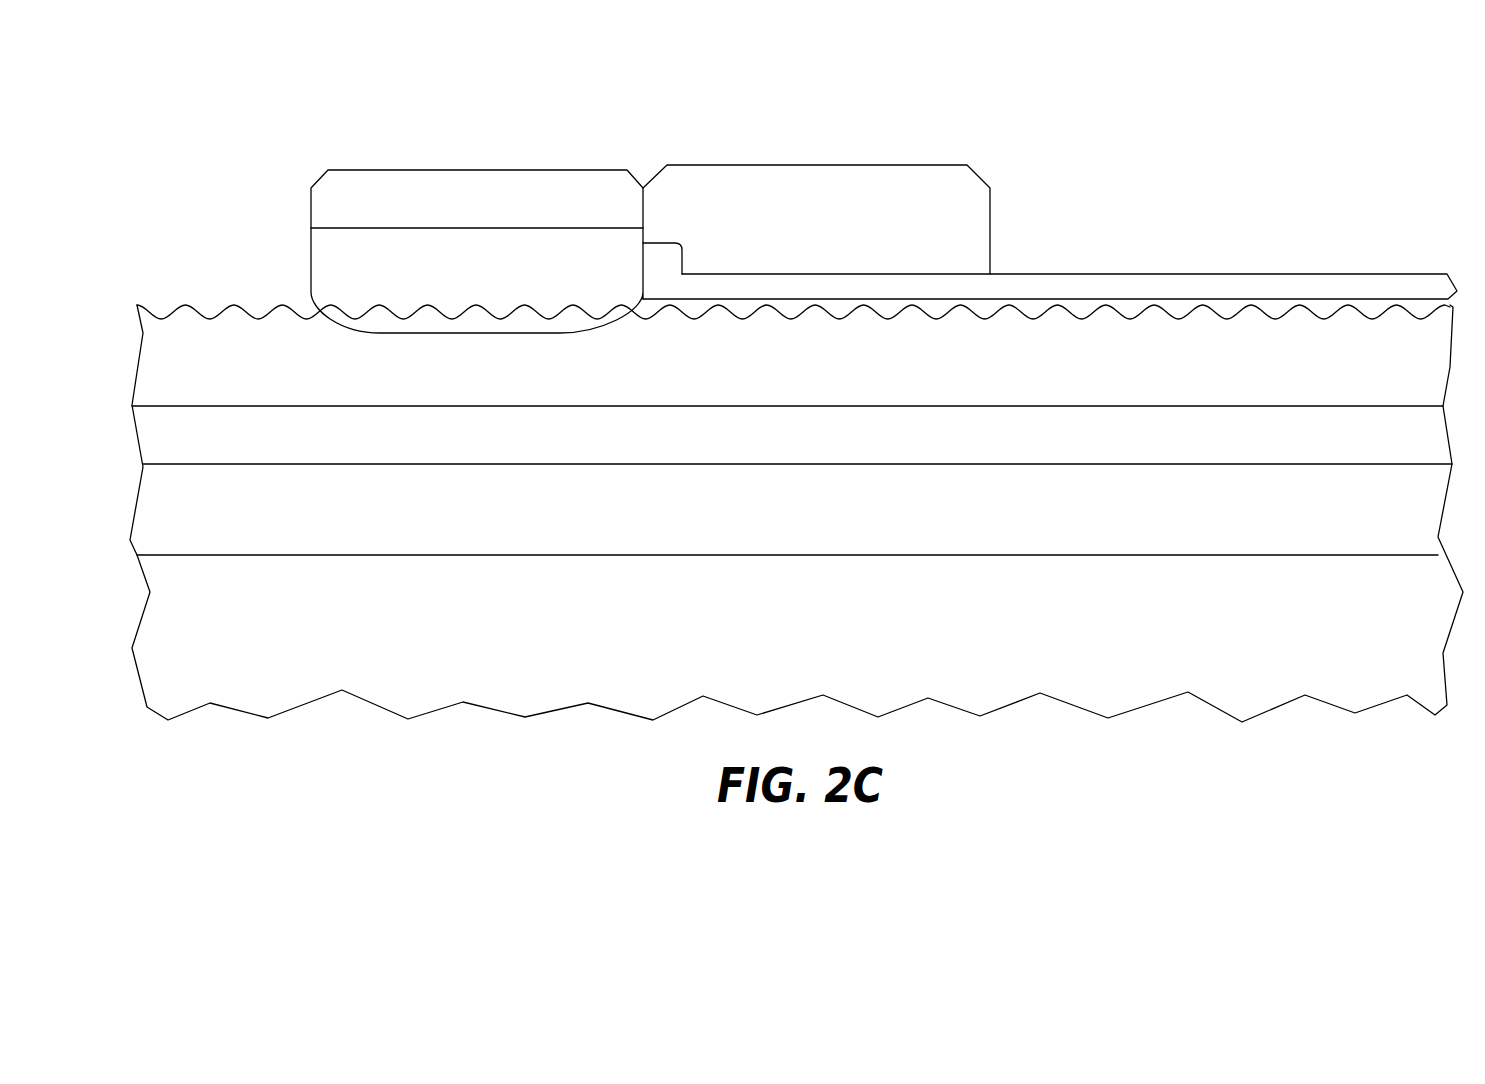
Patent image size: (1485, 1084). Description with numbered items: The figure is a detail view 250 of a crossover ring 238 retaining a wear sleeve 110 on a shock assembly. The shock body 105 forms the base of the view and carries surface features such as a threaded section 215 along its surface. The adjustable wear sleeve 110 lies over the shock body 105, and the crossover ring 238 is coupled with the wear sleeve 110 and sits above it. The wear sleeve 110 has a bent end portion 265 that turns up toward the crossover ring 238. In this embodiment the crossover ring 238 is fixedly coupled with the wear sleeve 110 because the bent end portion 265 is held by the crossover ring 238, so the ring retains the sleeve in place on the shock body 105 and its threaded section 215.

The shock body 105 is at (1438, 360).
The wear sleeve 110 is at (1118, 273).
The threaded section 215 is at (185, 302).
The crossover ring 238 is at (990, 115).
The detail view 250 is at (1308, 152).
The bent end portion 265 is at (685, 260).